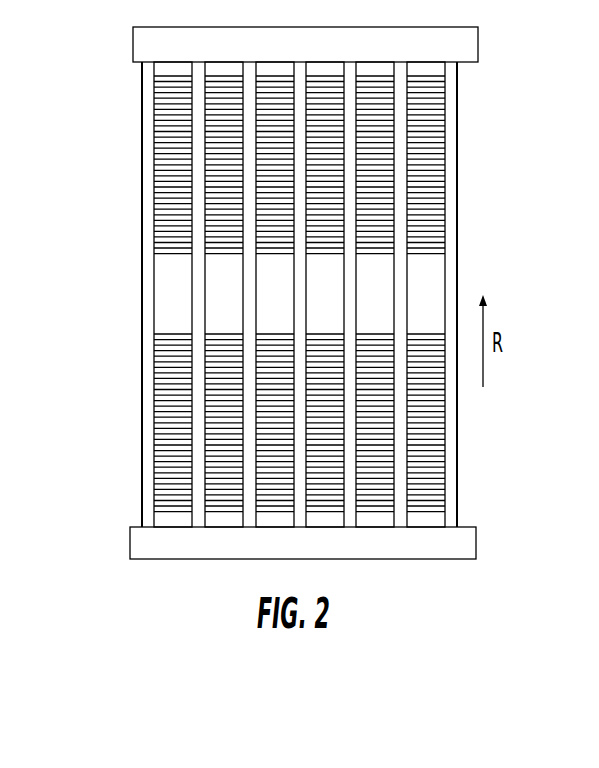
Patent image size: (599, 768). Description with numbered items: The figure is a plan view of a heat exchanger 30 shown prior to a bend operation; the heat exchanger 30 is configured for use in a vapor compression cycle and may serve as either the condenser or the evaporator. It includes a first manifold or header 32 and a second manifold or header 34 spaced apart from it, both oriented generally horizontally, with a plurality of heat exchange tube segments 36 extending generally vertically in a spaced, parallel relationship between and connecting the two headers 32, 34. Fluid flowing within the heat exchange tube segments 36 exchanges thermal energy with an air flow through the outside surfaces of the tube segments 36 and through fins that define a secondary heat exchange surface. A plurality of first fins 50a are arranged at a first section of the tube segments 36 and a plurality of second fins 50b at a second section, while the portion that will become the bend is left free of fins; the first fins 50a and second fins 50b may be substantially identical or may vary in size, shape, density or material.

The heat exchanger 30 is at (104, 59).
The first manifold or header 32 is at (131, 541).
The second manifold or header 34 is at (478, 47).
The heat exchange tube segments 36 is at (197, 188).
The first fins 50a is at (172, 450).
The second fins 50b is at (431, 147).